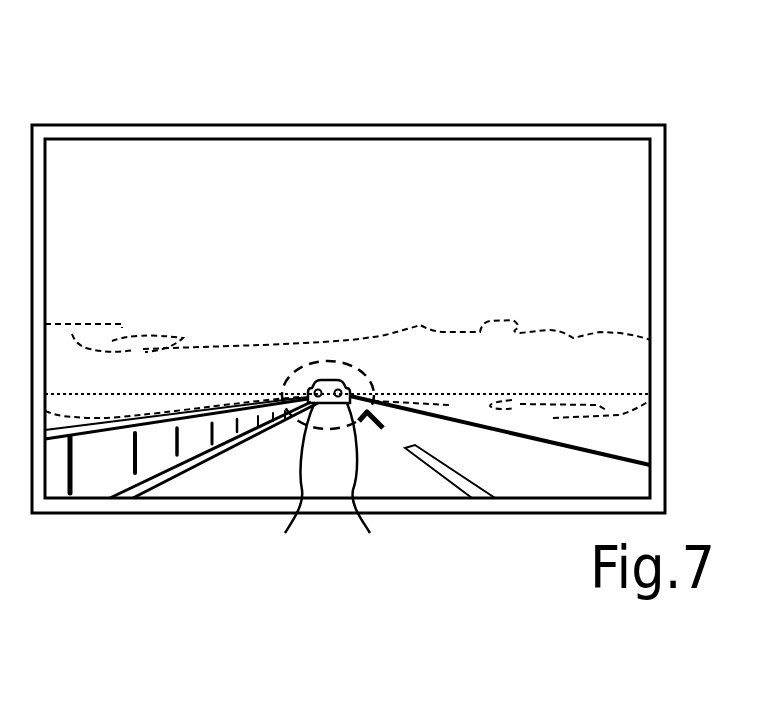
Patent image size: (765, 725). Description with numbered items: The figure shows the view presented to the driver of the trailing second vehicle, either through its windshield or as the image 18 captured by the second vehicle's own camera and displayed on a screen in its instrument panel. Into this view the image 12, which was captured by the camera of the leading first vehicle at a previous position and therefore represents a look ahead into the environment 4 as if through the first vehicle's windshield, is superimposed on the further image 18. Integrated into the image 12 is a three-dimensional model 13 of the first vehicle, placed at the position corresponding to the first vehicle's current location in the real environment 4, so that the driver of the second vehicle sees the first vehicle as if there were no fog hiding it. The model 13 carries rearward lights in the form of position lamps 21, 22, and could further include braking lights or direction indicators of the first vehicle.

The image 18 is at (573, 120).
The image 12 is at (346, 360).
The three-dimensional model 13 is at (322, 377).
The position lamp 21 is at (287, 485).
The position lamp 22 is at (367, 486).
The environment 4 is at (334, 470).